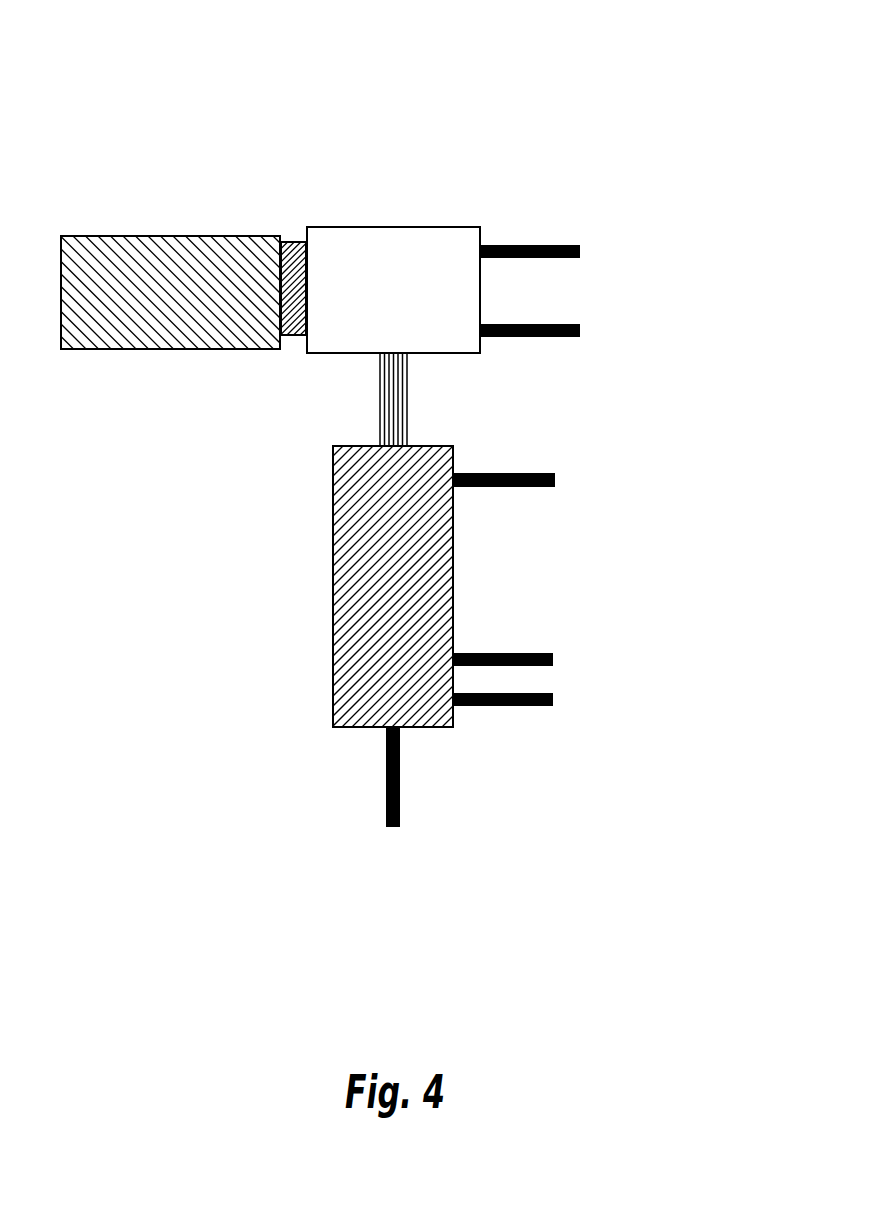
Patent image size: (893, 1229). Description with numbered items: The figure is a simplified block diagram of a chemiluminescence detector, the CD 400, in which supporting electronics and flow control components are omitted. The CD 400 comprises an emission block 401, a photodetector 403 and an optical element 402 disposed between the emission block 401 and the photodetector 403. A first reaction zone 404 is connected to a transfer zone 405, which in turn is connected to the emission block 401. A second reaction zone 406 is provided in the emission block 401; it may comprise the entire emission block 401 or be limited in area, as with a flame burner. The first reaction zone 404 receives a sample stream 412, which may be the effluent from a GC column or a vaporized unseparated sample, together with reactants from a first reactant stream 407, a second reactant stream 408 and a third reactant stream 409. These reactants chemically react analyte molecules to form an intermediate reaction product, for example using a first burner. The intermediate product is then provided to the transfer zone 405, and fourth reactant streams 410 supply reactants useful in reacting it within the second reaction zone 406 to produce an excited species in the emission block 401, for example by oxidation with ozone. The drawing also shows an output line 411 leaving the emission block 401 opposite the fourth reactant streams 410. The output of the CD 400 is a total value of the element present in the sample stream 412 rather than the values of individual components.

The CD 400 is at (355, 26).
The emission block 401 is at (447, 220).
The optical element 402 is at (293, 234).
The photodetector 403 is at (172, 232).
The first reaction zone 404 is at (326, 576).
The transfer zone 405 is at (370, 393).
The second reaction zone 406 is at (445, 343).
The first reactant stream 407 is at (574, 699).
The second reactant stream 408 is at (574, 660).
The third reactant stream 409 is at (575, 480).
The fourth reactant streams 410 is at (600, 330).
The output signal line 411 is at (582, 251).
The sample stream 412 is at (393, 848).